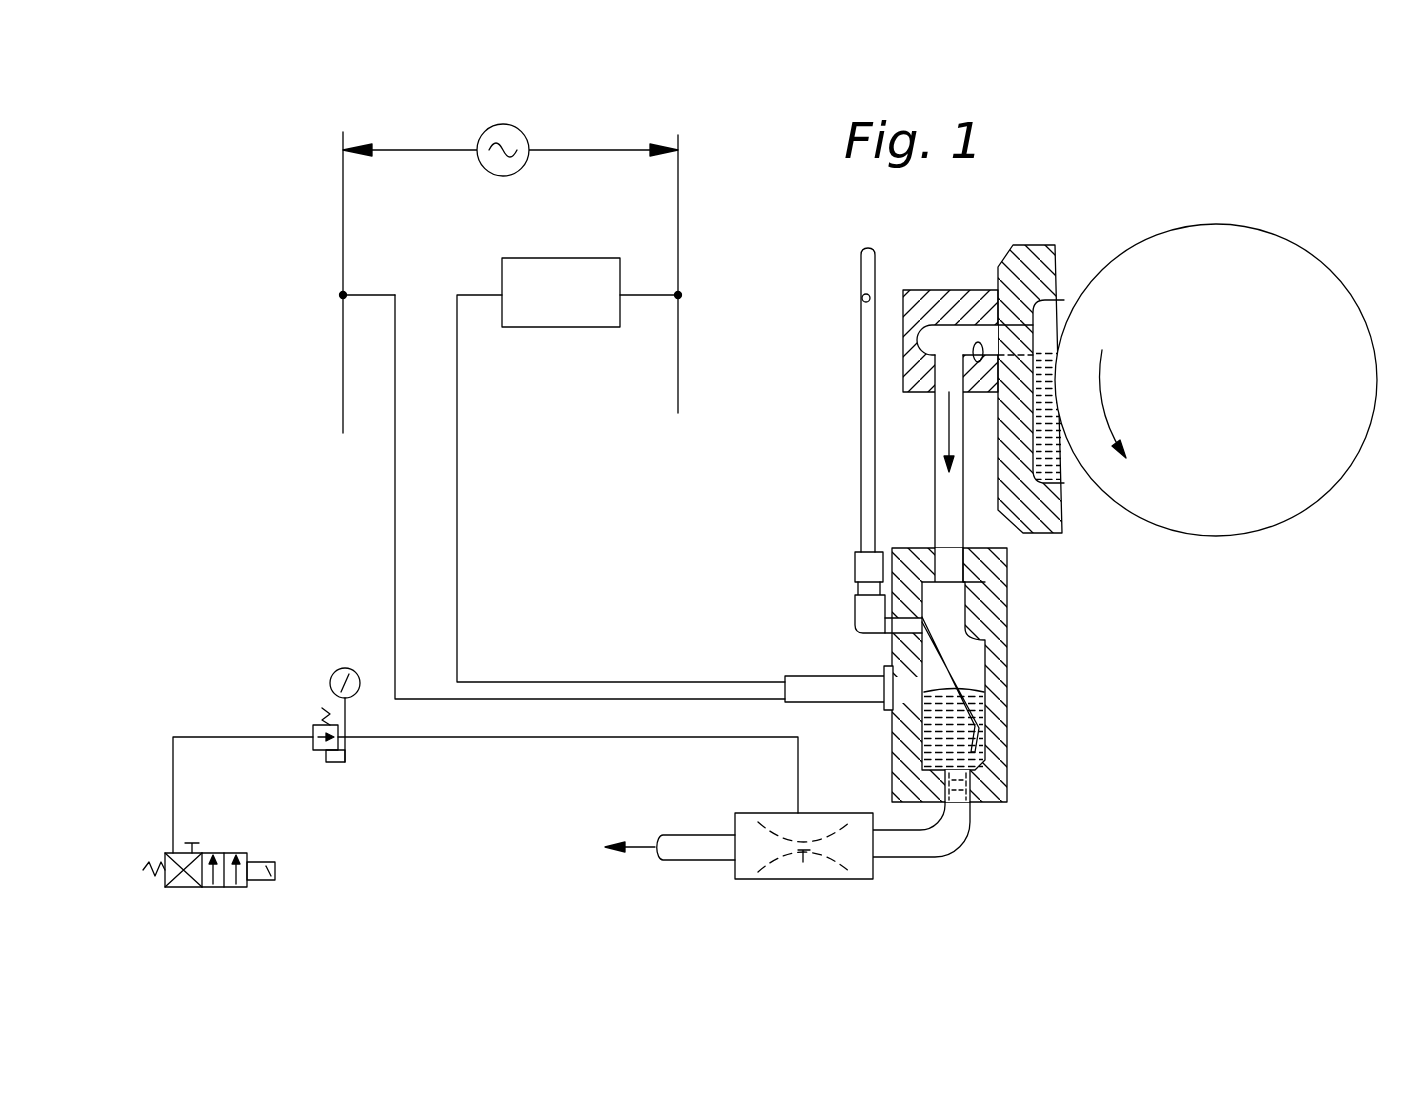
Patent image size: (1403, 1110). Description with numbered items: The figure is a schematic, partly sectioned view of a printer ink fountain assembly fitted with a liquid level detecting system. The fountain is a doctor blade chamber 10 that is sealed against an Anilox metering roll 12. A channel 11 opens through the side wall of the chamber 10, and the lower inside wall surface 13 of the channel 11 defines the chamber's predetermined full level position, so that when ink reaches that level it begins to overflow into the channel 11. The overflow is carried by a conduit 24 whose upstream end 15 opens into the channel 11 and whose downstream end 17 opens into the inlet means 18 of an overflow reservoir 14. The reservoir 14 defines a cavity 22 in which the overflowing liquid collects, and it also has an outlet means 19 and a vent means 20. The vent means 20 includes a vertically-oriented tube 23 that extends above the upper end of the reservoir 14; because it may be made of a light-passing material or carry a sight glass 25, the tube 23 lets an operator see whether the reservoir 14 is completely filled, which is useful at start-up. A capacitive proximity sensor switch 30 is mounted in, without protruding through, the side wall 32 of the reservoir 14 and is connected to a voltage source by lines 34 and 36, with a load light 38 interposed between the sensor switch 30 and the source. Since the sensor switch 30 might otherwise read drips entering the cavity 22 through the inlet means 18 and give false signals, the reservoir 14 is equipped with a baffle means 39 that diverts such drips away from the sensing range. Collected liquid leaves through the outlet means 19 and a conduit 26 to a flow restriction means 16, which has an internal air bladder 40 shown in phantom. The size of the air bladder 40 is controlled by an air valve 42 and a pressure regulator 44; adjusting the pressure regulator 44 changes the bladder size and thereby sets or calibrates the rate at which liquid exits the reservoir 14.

The doctor blade chamber 10 is at (1035, 244).
The channel 11 is at (951, 330).
The Anilox metering roll 12 is at (1317, 258).
The lower inside wall surface 13 is at (973, 364).
The overflow reservoir 14 is at (1024, 600).
The upstream end 15 is at (936, 408).
The flow restriction means 16 is at (875, 870).
The downstream end 17 is at (968, 536).
The inlet means 18 is at (948, 546).
The outlet means 19 is at (972, 791).
The vent means 20 is at (836, 614).
The cavity 22 is at (962, 634).
The vertically-oriented tube 23 is at (858, 355).
The conduit 24 is at (936, 466).
The sight glass 25 is at (858, 303).
The conduit 26 is at (970, 838).
The capacitive proximity sensor switch 30 is at (853, 690).
The side wall 32 is at (892, 776).
The line 34 is at (458, 486).
The line 36 is at (400, 487).
The load light 38 is at (570, 312).
The baffle means 39 is at (960, 680).
The internal air bladder 40 is at (803, 866).
The air valve 42 is at (238, 852).
The pressure regulator 44 is at (314, 748).